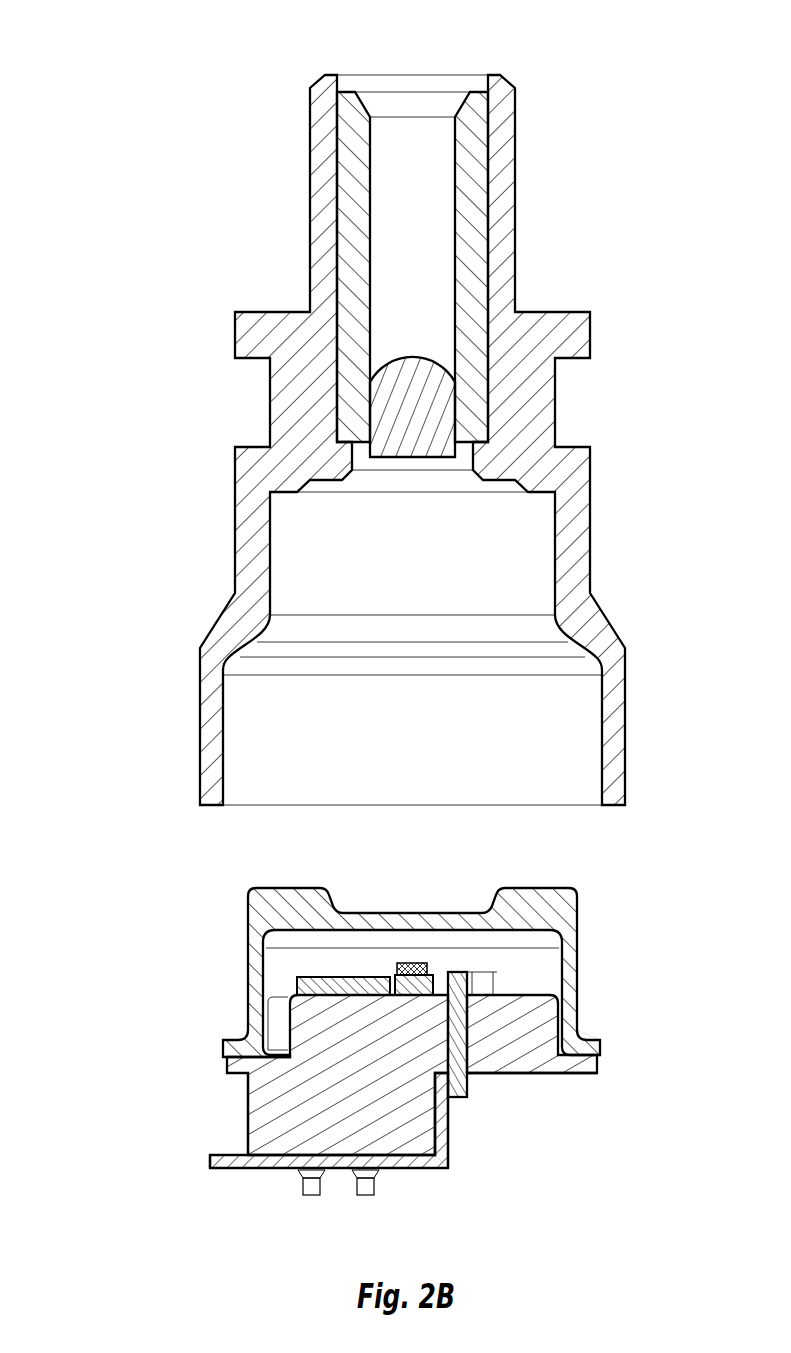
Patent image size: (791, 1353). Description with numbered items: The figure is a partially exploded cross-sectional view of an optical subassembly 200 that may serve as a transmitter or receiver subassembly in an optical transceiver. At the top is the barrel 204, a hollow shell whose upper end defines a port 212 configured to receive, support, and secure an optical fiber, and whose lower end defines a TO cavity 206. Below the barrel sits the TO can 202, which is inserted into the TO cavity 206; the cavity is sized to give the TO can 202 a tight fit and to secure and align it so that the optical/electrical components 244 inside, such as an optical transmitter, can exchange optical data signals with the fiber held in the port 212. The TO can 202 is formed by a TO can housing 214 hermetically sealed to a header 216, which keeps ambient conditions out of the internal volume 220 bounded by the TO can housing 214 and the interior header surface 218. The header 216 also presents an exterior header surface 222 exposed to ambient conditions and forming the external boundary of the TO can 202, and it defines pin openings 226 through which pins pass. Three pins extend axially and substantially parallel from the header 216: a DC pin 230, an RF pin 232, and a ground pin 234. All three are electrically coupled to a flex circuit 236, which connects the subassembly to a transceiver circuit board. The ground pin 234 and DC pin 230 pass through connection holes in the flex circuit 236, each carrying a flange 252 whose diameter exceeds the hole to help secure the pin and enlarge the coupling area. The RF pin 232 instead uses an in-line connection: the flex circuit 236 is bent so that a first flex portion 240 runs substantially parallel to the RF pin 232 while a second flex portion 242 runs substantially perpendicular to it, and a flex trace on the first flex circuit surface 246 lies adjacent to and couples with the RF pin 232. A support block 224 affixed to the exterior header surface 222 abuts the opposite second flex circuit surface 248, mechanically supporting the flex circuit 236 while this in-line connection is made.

The optical subassembly 200 is at (140, 60).
The TO can 202 is at (218, 883).
The barrel 204 is at (583, 538).
The TO cavity 206 is at (568, 725).
The port 212 is at (405, 140).
The TO can housing 214 is at (287, 895).
The header 216 is at (379, 1057).
The interior header surface 218 is at (543, 995).
The internal volume 220 is at (517, 962).
The exterior header surface 222 is at (580, 1077).
The support block 224 is at (263, 1123).
The pin openings 226 is at (467, 1008).
The DC pin 230 is at (365, 1198).
The RF pin 232 is at (458, 1100).
The ground pin 234 is at (308, 1197).
The flex circuit 236 is at (212, 1163).
The first flex portion 240 is at (452, 1130).
The second flex portion 242 is at (238, 1153).
The optical/electrical components 244 is at (306, 966).
The first flex circuit surface 246 is at (452, 1145).
The second flex circuit surface 248 is at (435, 1140).
The flange 252 is at (300, 1173).